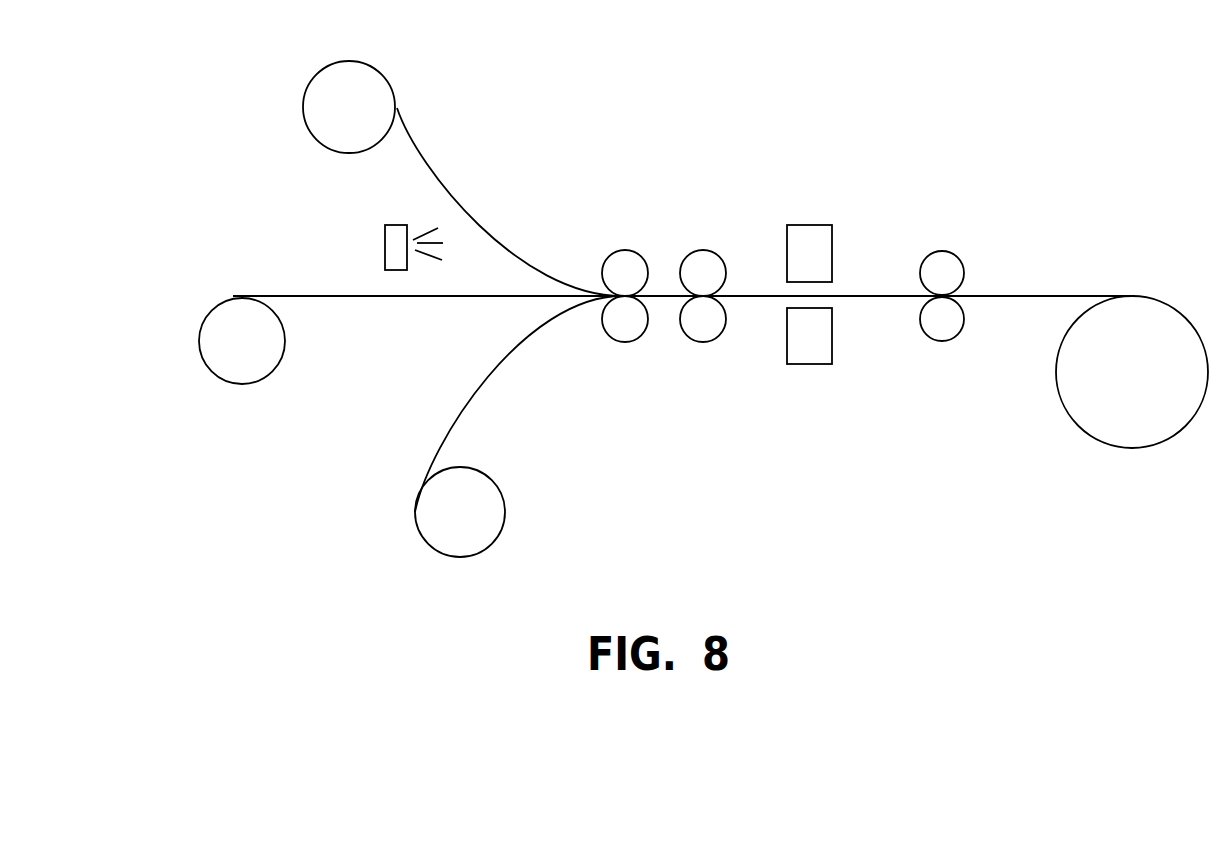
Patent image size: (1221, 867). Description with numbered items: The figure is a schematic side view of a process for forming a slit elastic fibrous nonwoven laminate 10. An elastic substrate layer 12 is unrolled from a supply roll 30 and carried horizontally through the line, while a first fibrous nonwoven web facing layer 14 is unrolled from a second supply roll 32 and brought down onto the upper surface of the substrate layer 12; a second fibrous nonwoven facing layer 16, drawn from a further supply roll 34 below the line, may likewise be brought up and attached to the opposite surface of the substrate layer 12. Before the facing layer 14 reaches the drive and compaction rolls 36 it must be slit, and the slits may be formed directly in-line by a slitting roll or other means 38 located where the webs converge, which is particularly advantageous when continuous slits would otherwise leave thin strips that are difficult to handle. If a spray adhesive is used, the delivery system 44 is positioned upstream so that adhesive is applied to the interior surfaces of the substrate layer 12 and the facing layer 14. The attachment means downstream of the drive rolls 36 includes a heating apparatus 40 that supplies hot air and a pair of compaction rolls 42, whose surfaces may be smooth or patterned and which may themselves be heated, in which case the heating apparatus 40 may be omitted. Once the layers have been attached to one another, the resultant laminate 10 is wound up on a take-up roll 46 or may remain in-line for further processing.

The elastic fibrous nonwoven laminate 10 is at (1087, 277).
The elastic substrate layer 12 is at (290, 282).
The first fibrous nonwoven web facing layer 14 is at (517, 240).
The second fibrous nonwoven facing layer 16 is at (528, 350).
The supply roll 30 is at (208, 372).
The supply roll 32 is at (370, 80).
The supply roll of third web 34 is at (497, 515).
The drive and compaction rolls 36 is at (728, 250).
The slitting roll 38 is at (597, 257).
The heating apparatus 40 is at (843, 247).
The compaction rolls 42 is at (977, 257).
The delivery system 44 is at (392, 248).
The take-up roll 46 is at (1150, 427).